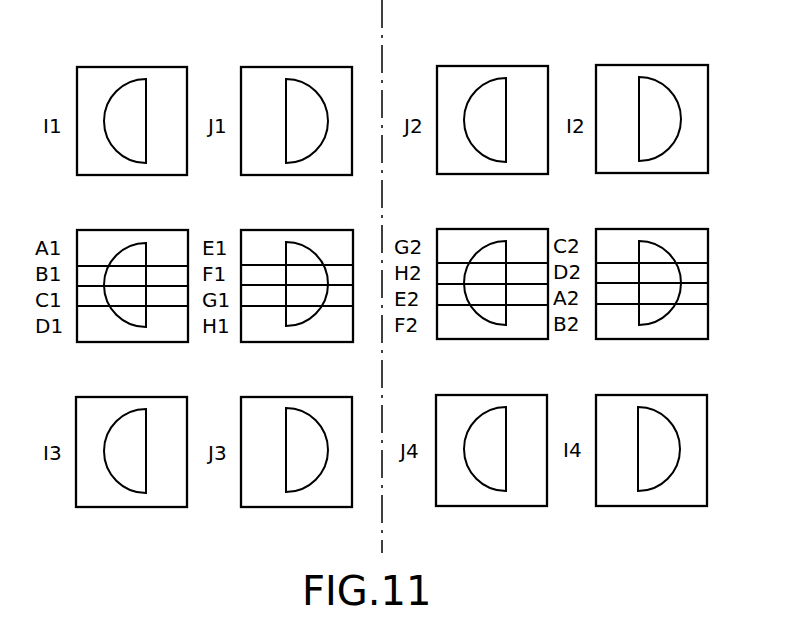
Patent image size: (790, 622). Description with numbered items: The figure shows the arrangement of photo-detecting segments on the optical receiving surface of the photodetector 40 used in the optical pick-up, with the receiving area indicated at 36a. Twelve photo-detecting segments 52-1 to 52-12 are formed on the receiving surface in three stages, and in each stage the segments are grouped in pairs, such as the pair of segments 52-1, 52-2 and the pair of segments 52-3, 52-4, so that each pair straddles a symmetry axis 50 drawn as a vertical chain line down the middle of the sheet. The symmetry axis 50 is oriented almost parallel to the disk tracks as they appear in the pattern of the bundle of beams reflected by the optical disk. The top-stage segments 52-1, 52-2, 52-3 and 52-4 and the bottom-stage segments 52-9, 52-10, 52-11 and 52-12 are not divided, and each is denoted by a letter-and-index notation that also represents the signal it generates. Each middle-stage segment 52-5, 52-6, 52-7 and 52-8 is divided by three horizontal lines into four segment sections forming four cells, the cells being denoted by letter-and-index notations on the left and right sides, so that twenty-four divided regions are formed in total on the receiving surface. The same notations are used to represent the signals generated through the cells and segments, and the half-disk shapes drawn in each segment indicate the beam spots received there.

The symmetry axis 50 is at (384, 50).
The display panel 40 is at (82, 565).
The display region 36a is at (640, 613).
The photo-detecting segment 52-1 is at (115, 67).
The photo-detecting segment 52-2 is at (272, 67).
The photo-detecting segment 52-3 is at (507, 66).
The photo-detecting segment 52-4 is at (666, 65).
The photo-detecting segment 52-5 is at (128, 230).
The photo-detecting segment 52-6 is at (282, 229).
The photo-detecting segment 52-7 is at (480, 229).
The photo-detecting segment 52-8 is at (635, 229).
The photo-detecting segment 52-9 is at (128, 397).
The photo-detecting segment 52-10 is at (282, 397).
The photo-detecting segment 52-11 is at (477, 395).
The photo-detecting segment 52-12 is at (632, 395).